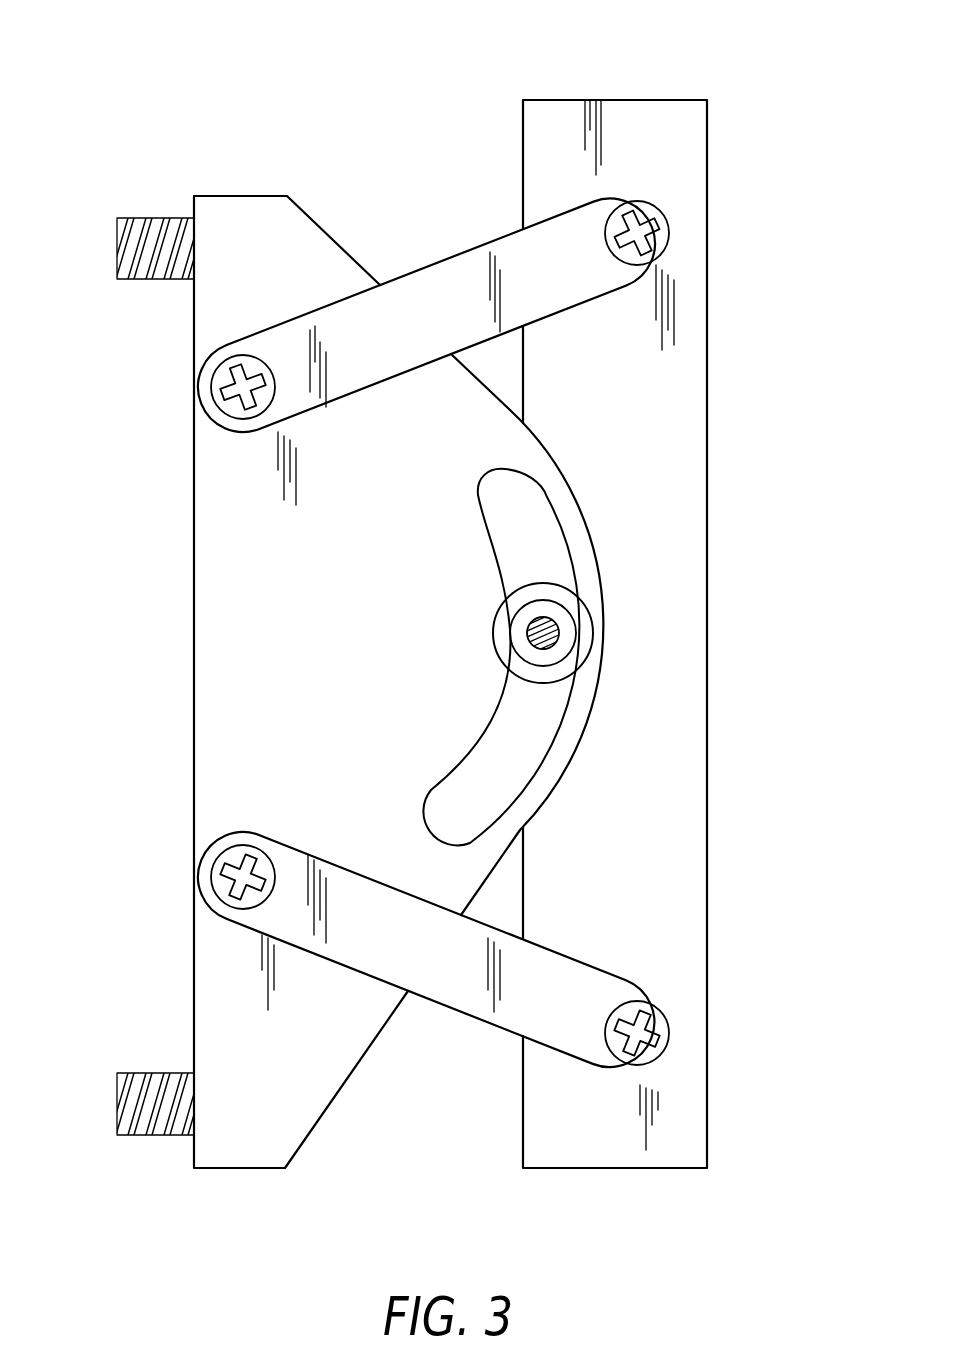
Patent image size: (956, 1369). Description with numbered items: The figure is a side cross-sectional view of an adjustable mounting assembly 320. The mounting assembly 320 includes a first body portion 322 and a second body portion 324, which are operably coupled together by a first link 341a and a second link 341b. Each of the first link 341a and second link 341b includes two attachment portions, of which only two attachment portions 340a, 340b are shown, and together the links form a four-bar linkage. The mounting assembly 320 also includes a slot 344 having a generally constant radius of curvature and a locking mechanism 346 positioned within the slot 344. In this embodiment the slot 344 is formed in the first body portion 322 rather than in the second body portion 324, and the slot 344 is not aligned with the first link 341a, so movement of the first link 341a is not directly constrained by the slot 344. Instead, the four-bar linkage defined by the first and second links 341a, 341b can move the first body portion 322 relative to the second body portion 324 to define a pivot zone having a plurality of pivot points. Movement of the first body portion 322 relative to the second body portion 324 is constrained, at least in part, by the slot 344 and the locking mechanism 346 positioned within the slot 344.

The adjustable mounting assembly 320 is at (640, 38).
The first body portion 322 is at (268, 622).
The second body portion 324 is at (672, 621).
The attachment portion 340a is at (429, 321).
The attachment portion 340b is at (431, 984).
The first link 341a is at (450, 290).
The second link 341b is at (461, 975).
The slot 344 is at (540, 534).
The locking mechanism 346 is at (553, 657).